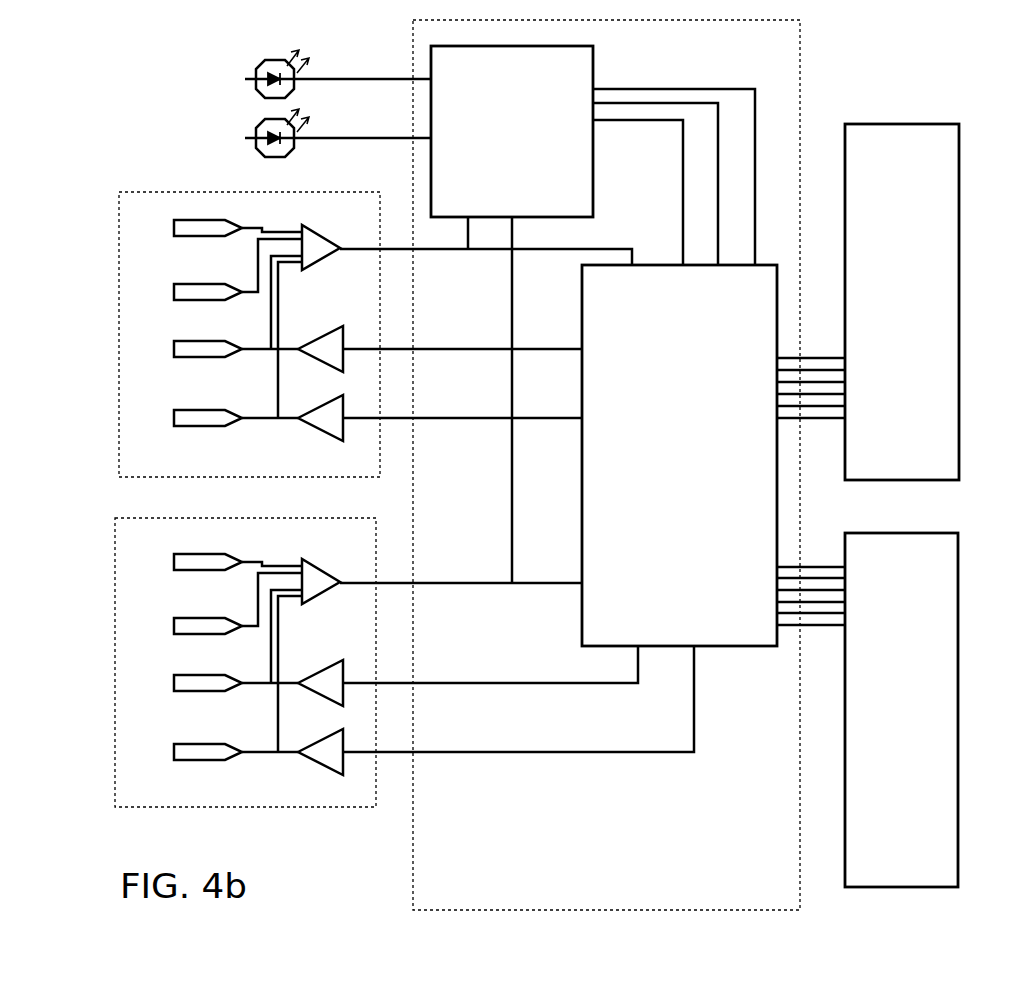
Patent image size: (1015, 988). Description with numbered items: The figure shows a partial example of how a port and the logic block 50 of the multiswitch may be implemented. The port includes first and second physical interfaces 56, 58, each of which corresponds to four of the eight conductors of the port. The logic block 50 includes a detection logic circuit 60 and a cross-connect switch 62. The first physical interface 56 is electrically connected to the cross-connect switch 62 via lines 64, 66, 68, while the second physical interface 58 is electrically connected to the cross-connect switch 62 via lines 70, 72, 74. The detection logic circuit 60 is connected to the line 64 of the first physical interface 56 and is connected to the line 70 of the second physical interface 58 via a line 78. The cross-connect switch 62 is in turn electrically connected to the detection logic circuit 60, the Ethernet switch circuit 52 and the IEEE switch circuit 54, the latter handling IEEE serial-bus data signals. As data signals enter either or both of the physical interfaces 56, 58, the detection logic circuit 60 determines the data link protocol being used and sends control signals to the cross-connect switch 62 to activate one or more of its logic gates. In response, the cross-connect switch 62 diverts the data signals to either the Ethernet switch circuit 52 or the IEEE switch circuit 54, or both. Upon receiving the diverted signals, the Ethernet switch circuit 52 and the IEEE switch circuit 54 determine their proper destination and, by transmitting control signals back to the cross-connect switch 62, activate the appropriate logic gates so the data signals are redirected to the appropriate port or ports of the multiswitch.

The logic block 50 is at (802, 40).
The Ethernet switch circuit 52 is at (960, 172).
The 1394 switch circuit 54 is at (958, 610).
The first physical interface 56 is at (118, 261).
The second physical interface 58 is at (115, 590).
The detection logic circuit 60 is at (593, 153).
The cross-connect switch 62 is at (724, 648).
The line 64 is at (480, 251).
The line 66 is at (477, 351).
The line 68 is at (474, 420).
The line 70 is at (473, 585).
The line 72 is at (473, 685).
The line 74 is at (471, 754).
The line 78 is at (512, 478).